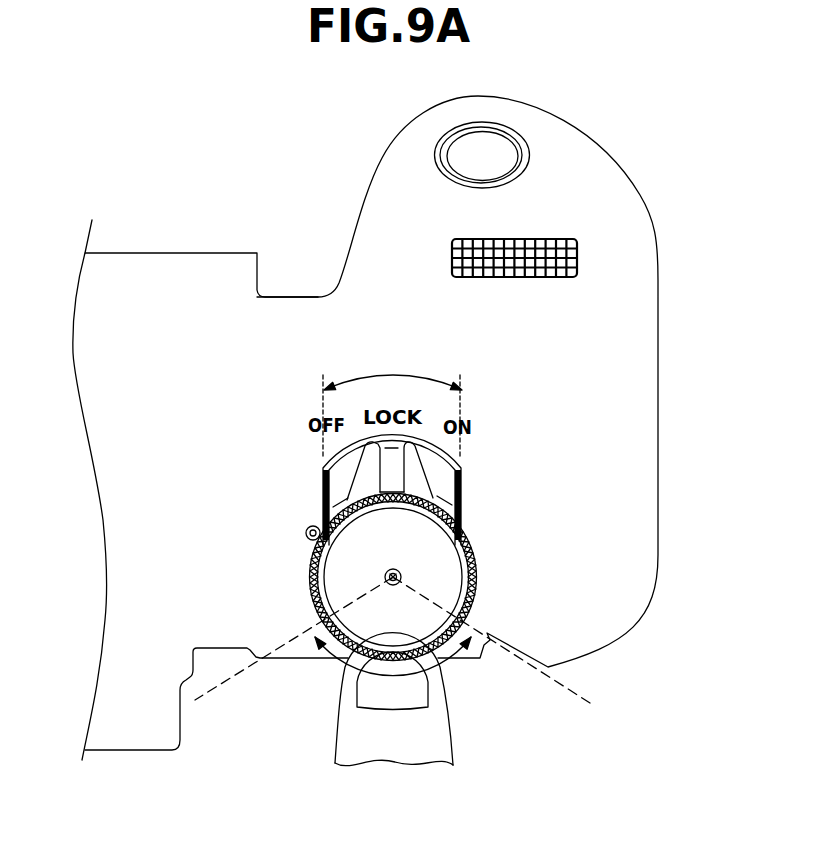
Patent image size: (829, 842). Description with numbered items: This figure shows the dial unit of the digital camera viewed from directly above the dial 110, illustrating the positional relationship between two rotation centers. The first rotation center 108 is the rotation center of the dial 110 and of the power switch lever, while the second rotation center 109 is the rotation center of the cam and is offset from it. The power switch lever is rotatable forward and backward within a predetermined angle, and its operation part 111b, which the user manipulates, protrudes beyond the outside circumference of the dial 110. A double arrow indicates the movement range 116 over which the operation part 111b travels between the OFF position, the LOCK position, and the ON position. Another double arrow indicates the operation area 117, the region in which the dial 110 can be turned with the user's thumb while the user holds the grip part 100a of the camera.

The grip part 100a is at (532, 99).
The first rotation center 108 is at (400, 570).
The second rotation center 109 is at (310, 529).
The dial 110 is at (448, 585).
The operation part 111b is at (420, 477).
The movement range 116 is at (395, 375).
The operation area 117 is at (462, 656).